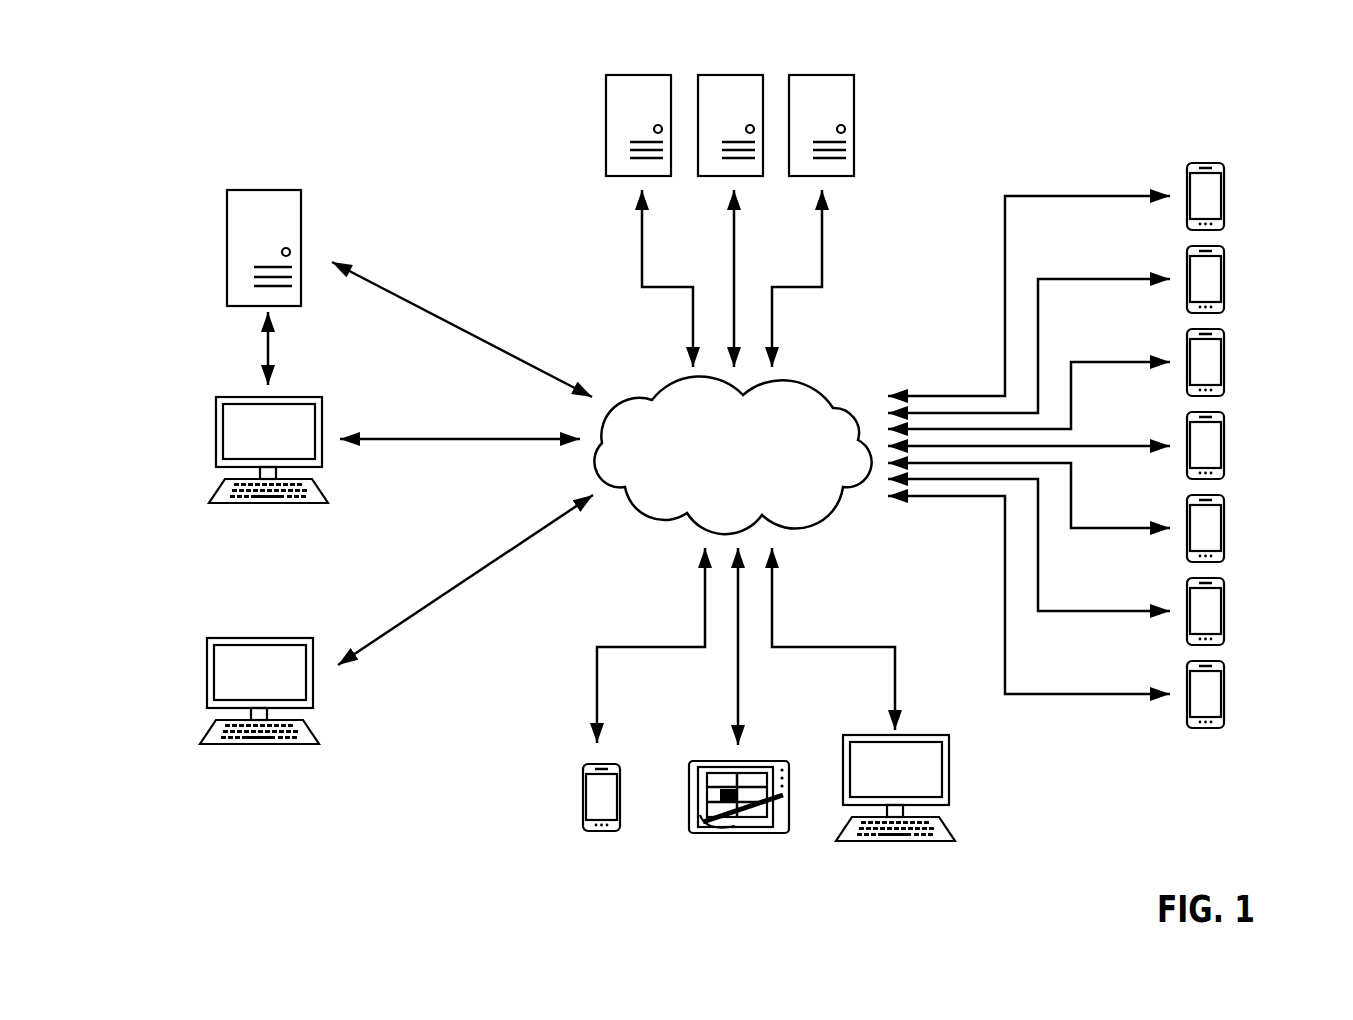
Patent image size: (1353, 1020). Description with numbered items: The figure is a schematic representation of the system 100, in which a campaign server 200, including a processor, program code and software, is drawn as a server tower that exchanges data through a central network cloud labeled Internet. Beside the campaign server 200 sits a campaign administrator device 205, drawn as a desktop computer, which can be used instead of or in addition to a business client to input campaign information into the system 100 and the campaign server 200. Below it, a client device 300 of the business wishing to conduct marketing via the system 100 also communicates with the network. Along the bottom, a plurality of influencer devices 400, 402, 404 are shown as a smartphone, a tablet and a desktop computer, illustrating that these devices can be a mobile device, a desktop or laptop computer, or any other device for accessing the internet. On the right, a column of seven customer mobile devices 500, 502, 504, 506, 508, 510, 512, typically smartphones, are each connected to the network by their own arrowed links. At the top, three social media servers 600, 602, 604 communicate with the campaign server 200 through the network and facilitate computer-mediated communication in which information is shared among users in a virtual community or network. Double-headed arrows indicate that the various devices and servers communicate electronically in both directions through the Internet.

The system 100 is at (433, 154).
The campaign server 200 is at (227, 270).
The campaign administrator device 205 is at (216, 423).
The client device 300 is at (207, 672).
The influencer device 400 is at (602, 831).
The influencer device 402 is at (747, 834).
The influencer device 404 is at (905, 842).
The customer mobile device 500 is at (1224, 200).
The customer mobile device 502 is at (1224, 283).
The customer mobile device 504 is at (1224, 366).
The customer mobile device 506 is at (1224, 449).
The customer mobile device 508 is at (1224, 532).
The customer mobile device 510 is at (1224, 615).
The customer mobile device 512 is at (1224, 698).
The social media server 600 is at (643, 75).
The social media server 602 is at (735, 75).
The social media server 604 is at (826, 75).